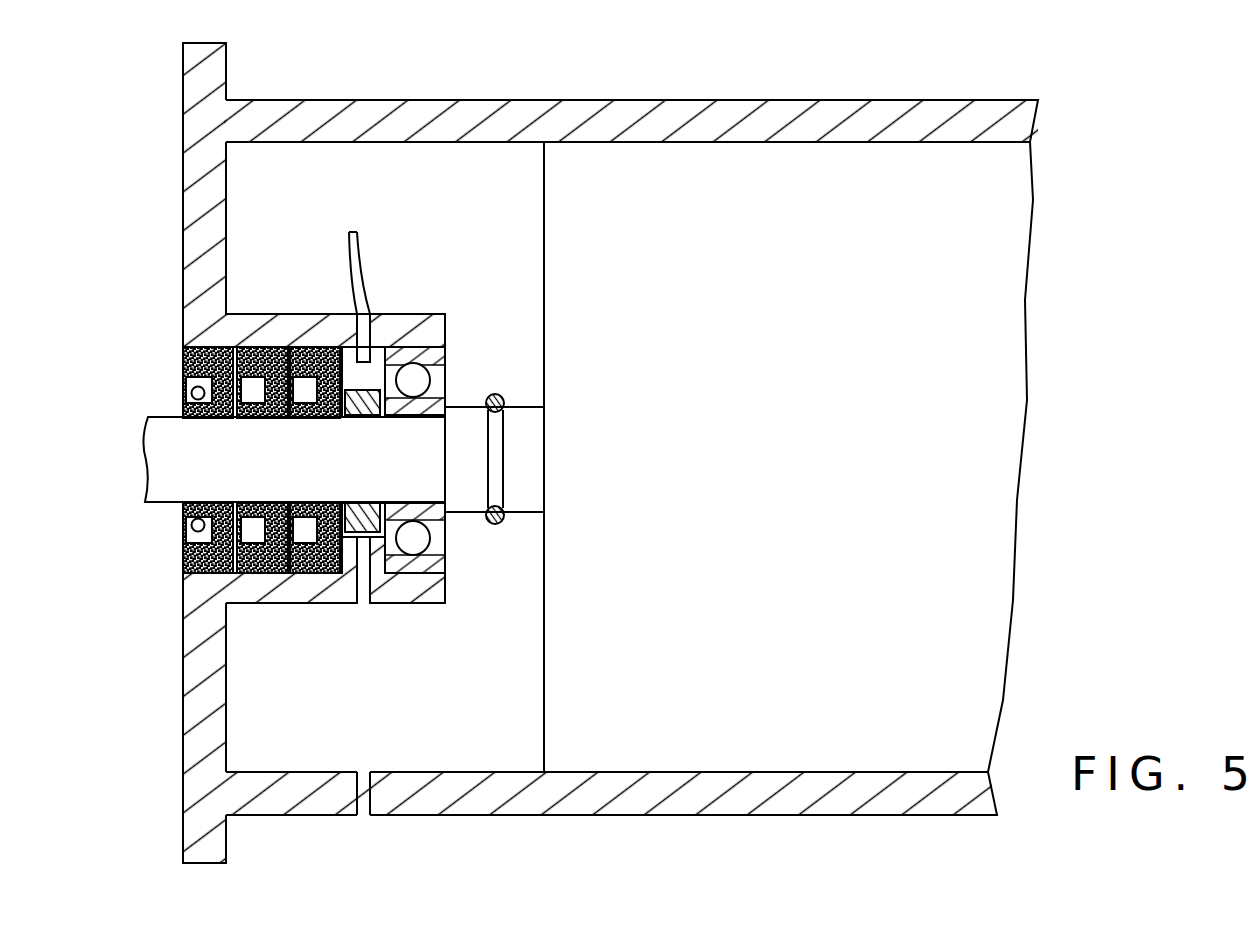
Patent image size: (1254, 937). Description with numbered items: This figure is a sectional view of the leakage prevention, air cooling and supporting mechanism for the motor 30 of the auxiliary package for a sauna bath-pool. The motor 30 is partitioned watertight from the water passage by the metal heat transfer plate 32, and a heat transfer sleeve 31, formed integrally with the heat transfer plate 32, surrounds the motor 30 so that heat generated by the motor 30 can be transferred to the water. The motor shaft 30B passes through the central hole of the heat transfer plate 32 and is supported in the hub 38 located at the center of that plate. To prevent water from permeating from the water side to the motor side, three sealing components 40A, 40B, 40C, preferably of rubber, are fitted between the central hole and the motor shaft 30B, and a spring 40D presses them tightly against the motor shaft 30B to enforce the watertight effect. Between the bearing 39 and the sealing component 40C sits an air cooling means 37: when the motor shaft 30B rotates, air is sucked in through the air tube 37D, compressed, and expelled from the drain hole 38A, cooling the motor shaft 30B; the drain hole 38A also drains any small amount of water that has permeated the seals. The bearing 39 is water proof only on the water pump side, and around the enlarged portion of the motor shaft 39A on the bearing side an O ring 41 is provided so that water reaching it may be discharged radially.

The motor 30 is at (982, 697).
The heat transfer sleeve 31 is at (913, 118).
The heat transfer plate 32 is at (203, 163).
The motor shaft 30B is at (177, 435).
The air cooling means 37 is at (373, 390).
The air tube 37D is at (360, 248).
The hub 38 is at (422, 592).
The drain hole 38A is at (360, 590).
The bearing 39 is at (443, 340).
The enlarged portion of the motor shaft 39A is at (468, 493).
The sealing component 40A is at (205, 345).
The sealing component 40B is at (262, 345).
The sealing component 40C is at (312, 345).
The spring 40D is at (188, 537).
The O ring 41 is at (497, 393).